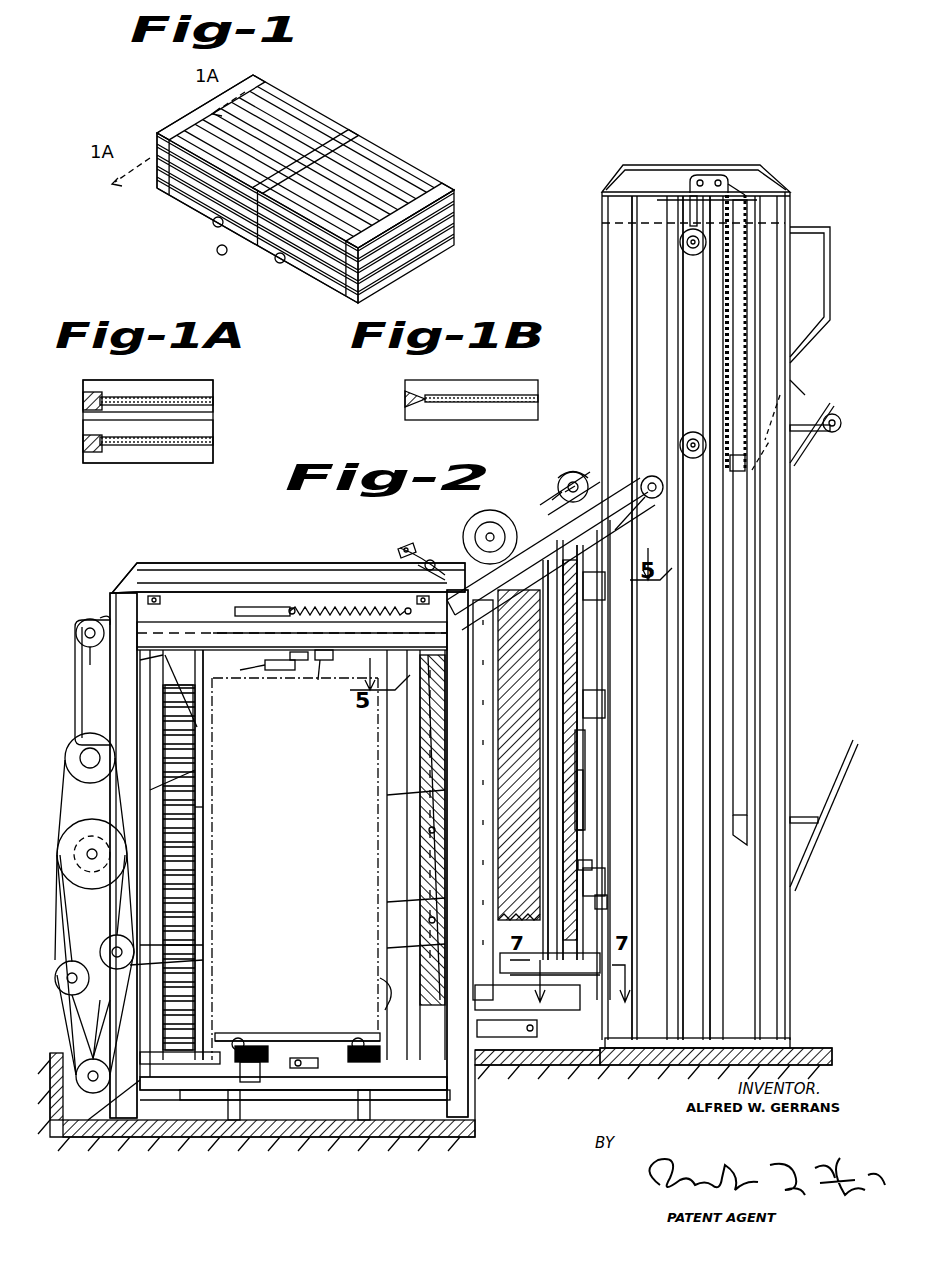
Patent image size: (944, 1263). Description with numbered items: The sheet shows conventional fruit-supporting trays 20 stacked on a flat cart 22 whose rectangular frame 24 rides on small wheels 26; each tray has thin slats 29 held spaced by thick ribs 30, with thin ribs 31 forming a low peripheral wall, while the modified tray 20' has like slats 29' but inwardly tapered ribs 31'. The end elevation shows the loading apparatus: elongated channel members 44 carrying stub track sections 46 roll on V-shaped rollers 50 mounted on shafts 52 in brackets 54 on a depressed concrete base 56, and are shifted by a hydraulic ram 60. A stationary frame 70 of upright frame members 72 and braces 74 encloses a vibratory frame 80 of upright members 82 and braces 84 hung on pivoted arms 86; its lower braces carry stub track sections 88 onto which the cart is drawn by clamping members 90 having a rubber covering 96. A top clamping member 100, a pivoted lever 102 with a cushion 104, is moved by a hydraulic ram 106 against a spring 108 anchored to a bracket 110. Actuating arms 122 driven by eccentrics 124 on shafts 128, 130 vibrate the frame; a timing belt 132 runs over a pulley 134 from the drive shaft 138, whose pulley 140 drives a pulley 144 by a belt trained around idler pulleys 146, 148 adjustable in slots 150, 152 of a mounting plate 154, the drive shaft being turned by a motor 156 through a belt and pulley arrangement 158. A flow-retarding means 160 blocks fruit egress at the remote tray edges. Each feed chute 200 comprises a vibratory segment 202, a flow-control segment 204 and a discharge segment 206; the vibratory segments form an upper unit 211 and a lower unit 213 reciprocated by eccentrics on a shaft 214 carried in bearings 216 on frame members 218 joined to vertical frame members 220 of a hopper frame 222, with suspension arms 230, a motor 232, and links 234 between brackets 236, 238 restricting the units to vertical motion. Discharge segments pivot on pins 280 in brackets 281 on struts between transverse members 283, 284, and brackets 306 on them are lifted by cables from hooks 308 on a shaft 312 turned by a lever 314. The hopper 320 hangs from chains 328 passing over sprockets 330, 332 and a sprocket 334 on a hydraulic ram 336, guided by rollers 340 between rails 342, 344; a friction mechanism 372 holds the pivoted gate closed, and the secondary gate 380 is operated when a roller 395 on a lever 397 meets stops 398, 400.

In FIG. 1, the fruit-supporting tray 20 is at (335, 189).
In FIG. 1A, the fruit-supporting tray 20 is at (178, 421).
In FIG. 1, the flat cart 22 is at (305, 275).
In FIG. 2, the flat cart 22 is at (310, 1030).
In FIG. 1, the rectangular frame 24 is at (185, 200).
In FIG. 2, the rectangular frame 24 is at (300, 1030).
In FIG. 1, the small wheels 26 is at (275, 260).
In FIG. 2, the small wheels 26 is at (238, 1036).
In FIG. 1, the fruit-supporting slats 29 is at (306, 162).
In FIG. 1A, the fruit-supporting slats 29 is at (156, 423).
In FIG. 1, the thick parallel ribs 30 is at (258, 76).
In FIG. 1A, the thick parallel ribs 30 is at (200, 385).
In FIG. 1, the thin ribs 31 is at (315, 203).
In FIG. 1A, the thin ribs 31 is at (73, 433).
In FIG. 1B, the modified tray 20' is at (436, 394).
In FIG. 1B, the fruit-supporting slats 29' is at (481, 377).
In FIG. 1B, the tapered thin ribs 31' is at (382, 404).
In FIG. 2, the V-shaped channel members 44 is at (220, 1060).
In FIG. 2, the stub track sections 46 is at (248, 1044).
In FIG. 2, the V-shaped rollers 50 is at (235, 1122).
In FIG. 2, the rotatable shafts 52 is at (240, 1102).
In FIG. 2, the brackets 54 is at (300, 1092).
In FIG. 2, the concrete base 56 is at (122, 1128).
In FIG. 2, the hydraulic ram 60 is at (312, 1050).
In FIG. 2, the stationary box-like frame 70 is at (175, 560).
In FIG. 2, the upright frame members 72 is at (125, 575).
In FIG. 2, the braces 74 is at (210, 563).
In FIG. 2, the vibratory frame 80 is at (160, 765).
In FIG. 2, the upright members 82 is at (170, 800).
In FIG. 2, the braces 84 is at (215, 575).
In FIG. 2, the suspending arms 86 is at (160, 600).
In FIG. 2, the stub track sections 88 is at (262, 1044).
In FIG. 2, the clamping members 90 is at (195, 832).
In FIG. 2, the rubber covering 96 is at (203, 810).
In FIG. 2, the top clamping member 100 is at (290, 672).
In FIG. 2, the pivoted lever 102 is at (320, 670).
In FIG. 2, the tray-engaging cushion 104 is at (290, 658).
In FIG. 2, the hydraulic ram 106 is at (250, 620).
In FIG. 2, the spring 108 is at (318, 615).
In FIG. 2, the bracket 110 is at (395, 628).
In FIG. 2, the eccentrically-actuated arms 122 is at (65, 1128).
In FIG. 2, the eccentric mechanisms 124 is at (78, 625).
In FIG. 2, the upper eccentric shaft 128 is at (90, 660).
In FIG. 2, the lower eccentric shaft 130 is at (93, 1058).
In FIG. 2, the timing belt 132 is at (75, 705).
In FIG. 2, the pulley 134 is at (98, 610).
In FIG. 2, the horizontal drive shaft 138 is at (92, 860).
In FIG. 2, the pulley 140 is at (203, 860).
In FIG. 2, the pulley 144 is at (85, 1085).
In FIG. 2, the idler pulley 146 is at (122, 940).
In FIG. 2, the idler pulley 148 is at (82, 995).
In FIG. 2, the slot 150 is at (95, 975).
In FIG. 2, the slot 152 is at (203, 945).
In FIG. 2, the mounting plate 154 is at (203, 965).
In FIG. 2, the drive motor 156 is at (72, 738).
In FIG. 2, the belt and pulley arrangement 158 is at (165, 782).
In FIG. 2, the flow-retarding means 160 is at (180, 740).
In FIG. 2, the feed chute 200 is at (470, 870).
In FIG. 2, the vibratory chute segment 202 is at (590, 648).
In FIG. 2, the intermediate flow-control segment 204 is at (430, 850).
In FIG. 2, the discharge segment 206 is at (387, 948).
In FIG. 2, the upper vibratory chute unit 211 is at (590, 620).
In FIG. 2, the lower vibratory chute unit 213 is at (595, 805).
In FIG. 2, the eccentric shaft 214 is at (580, 475).
In FIG. 2, the bearings 216 is at (545, 498).
In FIG. 2, the stationary frame members 218 is at (475, 502).
In FIG. 2, the vertical frame members 220 is at (605, 298).
In FIG. 2, the hopper supporting frame 222 is at (790, 188).
In FIG. 2, the elongated suspension arms 230 is at (585, 678).
In FIG. 2, the motor 232 is at (460, 540).
In FIG. 2, the short links 234 is at (605, 585).
In FIG. 2, the bracket 236 is at (607, 905).
In FIG. 2, the bracket 238 is at (600, 865).
In FIG. 2, the pins 280 is at (387, 795).
In FIG. 2, the brackets 281 is at (387, 902).
In FIG. 2, the transverse frame member 283 is at (468, 545).
In FIG. 2, the transverse frame member 284 is at (537, 1028).
In FIG. 2, the encompassing bracket 306 is at (428, 828).
In FIG. 2, the hook 308 is at (425, 565).
In FIG. 2, the rotary shaft 312 is at (400, 545).
In FIG. 2, the manual actuating lever 314 is at (398, 552).
In FIG. 2, the hopper 320 is at (640, 273).
In FIG. 2, the flexible link chain 328 is at (735, 213).
In FIG. 2, the idler sprocket 330 is at (705, 175).
In FIG. 2, the idler sprocket 332 is at (722, 178).
In FIG. 2, the idler sprocket 334 is at (745, 468).
In FIG. 2, the hydraulic ram 336 is at (742, 535).
In FIG. 2, the guide rollers 340 is at (680, 243).
In FIG. 2, the guide rail 342 is at (685, 578).
In FIG. 2, the guide rail 344 is at (716, 612).
In FIG. 2, the friction mechanism 372 is at (653, 478).
In FIG. 2, the secondary gate 380 is at (770, 440).
In FIG. 2, the roller 395 is at (850, 395).
In FIG. 2, the lever 397 is at (800, 388).
In FIG. 2, the upper stop 398 is at (770, 470).
In FIG. 2, the lower stop 400 is at (845, 752).